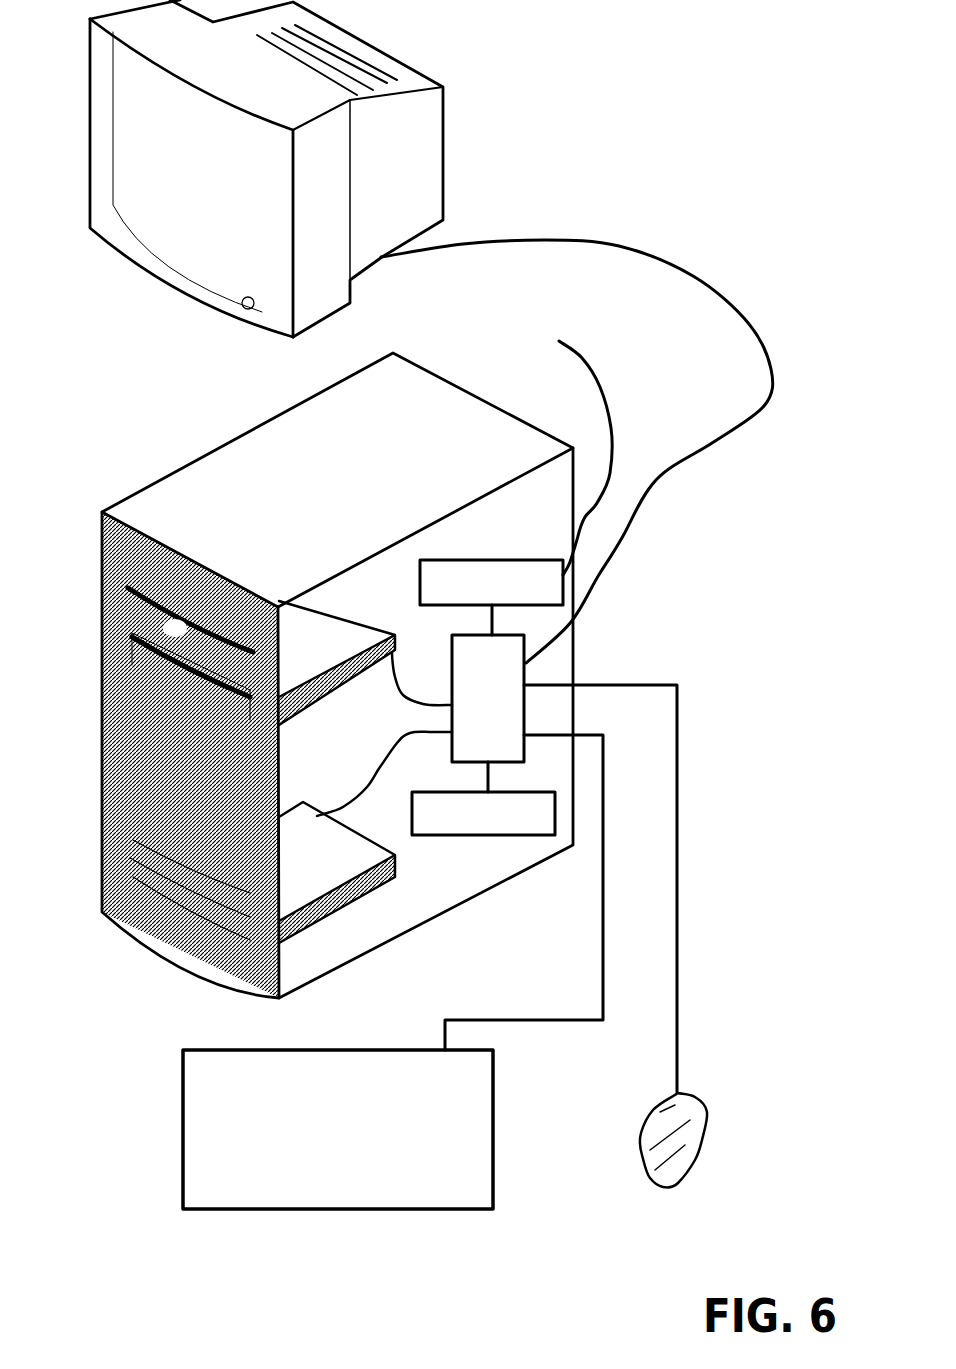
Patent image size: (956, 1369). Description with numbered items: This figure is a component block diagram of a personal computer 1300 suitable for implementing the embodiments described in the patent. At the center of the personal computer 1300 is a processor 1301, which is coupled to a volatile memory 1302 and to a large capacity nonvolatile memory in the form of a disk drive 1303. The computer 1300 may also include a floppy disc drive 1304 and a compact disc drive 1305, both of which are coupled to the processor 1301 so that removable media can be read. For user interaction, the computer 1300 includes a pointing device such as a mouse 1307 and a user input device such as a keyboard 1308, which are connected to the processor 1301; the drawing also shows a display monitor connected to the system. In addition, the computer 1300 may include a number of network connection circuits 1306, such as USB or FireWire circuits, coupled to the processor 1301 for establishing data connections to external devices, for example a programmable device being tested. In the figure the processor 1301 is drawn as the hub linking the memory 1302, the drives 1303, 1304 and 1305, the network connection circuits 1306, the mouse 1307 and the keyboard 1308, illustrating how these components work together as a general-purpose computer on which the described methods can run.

The personal computer 1300 is at (438, 375).
The processor 1301 is at (513, 708).
The volatile memory 1302 is at (508, 827).
The disk drive 1303 is at (395, 880).
The floppy disc drive 1304 is at (283, 723).
The compact disc (CD) drive 1305 is at (517, 597).
The network connection circuits 1306 is at (445, 142).
The mouse 1307 is at (642, 1127).
The keyboard 1308 is at (183, 1122).